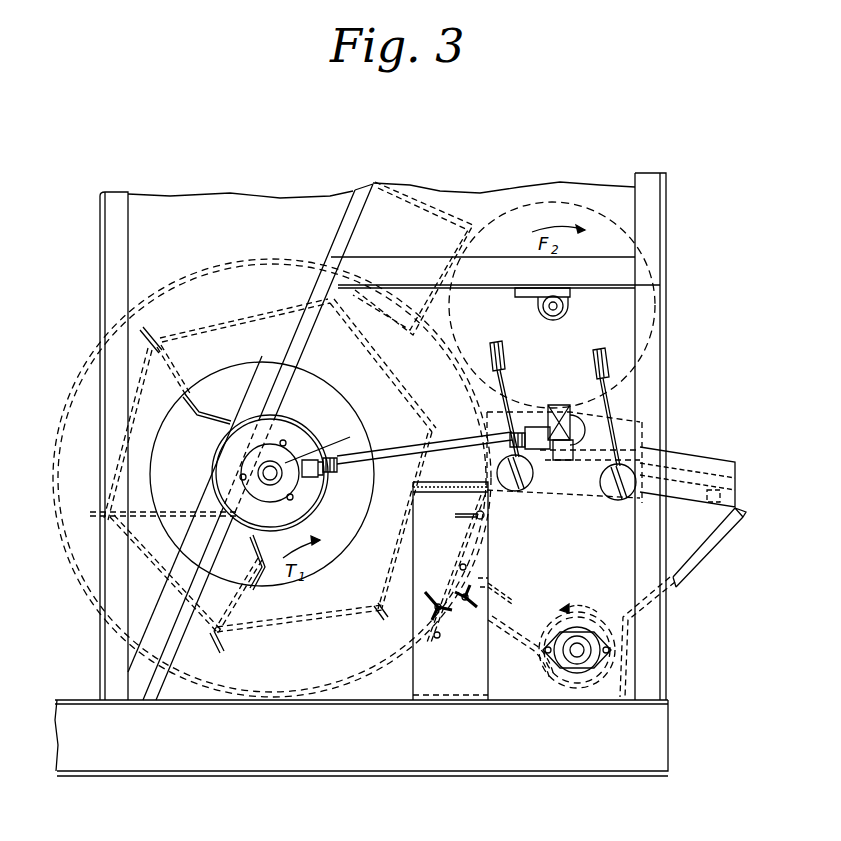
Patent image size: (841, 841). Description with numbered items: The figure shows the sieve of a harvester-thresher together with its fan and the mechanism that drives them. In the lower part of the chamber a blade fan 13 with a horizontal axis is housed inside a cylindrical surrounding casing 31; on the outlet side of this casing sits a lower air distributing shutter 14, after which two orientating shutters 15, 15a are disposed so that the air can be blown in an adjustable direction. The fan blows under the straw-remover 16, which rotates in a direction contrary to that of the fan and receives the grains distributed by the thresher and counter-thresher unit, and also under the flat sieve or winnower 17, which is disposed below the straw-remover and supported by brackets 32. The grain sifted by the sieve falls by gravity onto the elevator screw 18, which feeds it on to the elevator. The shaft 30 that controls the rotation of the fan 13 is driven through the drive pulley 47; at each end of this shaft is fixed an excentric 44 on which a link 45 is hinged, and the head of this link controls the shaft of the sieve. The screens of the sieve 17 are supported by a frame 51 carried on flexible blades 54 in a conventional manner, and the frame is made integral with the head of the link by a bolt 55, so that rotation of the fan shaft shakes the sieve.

The blade fan 13 is at (357, 613).
The lower air distributing shutter 14 is at (447, 592).
The orientating shutter 15 is at (447, 620).
The orientating shutter 15a is at (470, 540).
The straw-remover 16 is at (648, 350).
The flat sieve 17 is at (683, 467).
The elevator screw 18 is at (607, 670).
The shaft 30 is at (268, 523).
The cylindrical surrounding casing 31 is at (196, 683).
The brackets 32 is at (705, 547).
The excentric 44 is at (278, 462).
The link 45 is at (458, 447).
The drive pulley 47 is at (227, 452).
The frame 51 is at (697, 485).
The flexible blades 54 is at (597, 388).
The bolt 55 is at (562, 460).